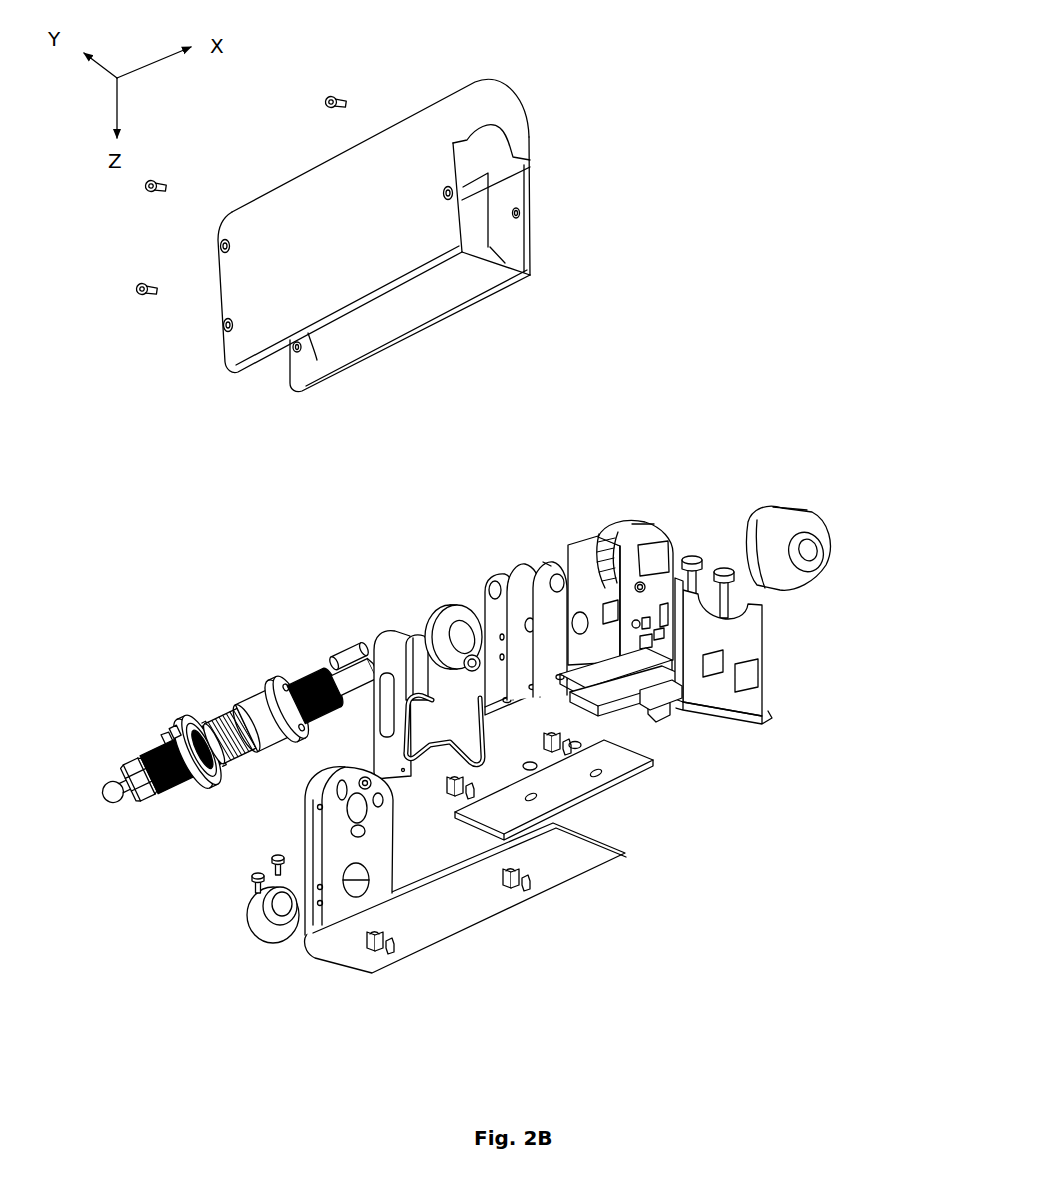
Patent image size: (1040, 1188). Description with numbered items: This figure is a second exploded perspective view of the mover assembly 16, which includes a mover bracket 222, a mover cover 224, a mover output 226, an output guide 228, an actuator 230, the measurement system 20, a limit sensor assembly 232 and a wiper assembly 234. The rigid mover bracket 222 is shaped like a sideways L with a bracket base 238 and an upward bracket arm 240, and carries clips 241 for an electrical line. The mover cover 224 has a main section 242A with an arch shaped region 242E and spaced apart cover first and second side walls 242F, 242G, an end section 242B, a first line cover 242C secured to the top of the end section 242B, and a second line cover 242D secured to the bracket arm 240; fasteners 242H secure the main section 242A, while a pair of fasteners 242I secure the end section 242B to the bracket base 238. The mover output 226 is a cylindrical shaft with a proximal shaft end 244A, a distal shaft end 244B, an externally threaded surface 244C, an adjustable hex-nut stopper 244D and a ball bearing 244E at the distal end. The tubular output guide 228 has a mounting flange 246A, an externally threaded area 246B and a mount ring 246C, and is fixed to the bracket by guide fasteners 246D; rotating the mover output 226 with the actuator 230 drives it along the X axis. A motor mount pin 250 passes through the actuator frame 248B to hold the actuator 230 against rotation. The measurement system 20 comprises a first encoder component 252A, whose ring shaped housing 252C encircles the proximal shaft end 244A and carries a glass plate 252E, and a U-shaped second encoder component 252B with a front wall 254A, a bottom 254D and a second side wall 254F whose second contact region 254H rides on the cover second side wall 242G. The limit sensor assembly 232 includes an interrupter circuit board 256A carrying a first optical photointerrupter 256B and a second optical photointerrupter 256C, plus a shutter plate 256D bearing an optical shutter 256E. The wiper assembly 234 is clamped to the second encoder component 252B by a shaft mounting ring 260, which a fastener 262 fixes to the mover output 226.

The mover assembly 16 is at (716, 163).
The measurement system 20 is at (678, 356).
The mover bracket 222 is at (447, 1050).
The mover cover 224 is at (477, 64).
The mover output 226 is at (157, 753).
The output guide 228 is at (250, 707).
The actuator 230 is at (377, 671).
The limit sensor assembly 232 is at (885, 901).
The wiper assembly 234 is at (512, 459).
The bracket base 238 is at (350, 953).
The bracket arm 240 is at (330, 870).
The clips 241 is at (403, 967).
The main section 242A is at (283, 181).
The end section 242B is at (745, 720).
The first line cover 242C is at (787, 587).
The second line cover 242D is at (260, 925).
The arch shaped region 242E is at (393, 133).
The cover first side wall 242F is at (529, 230).
The cover second side wall 242G is at (462, 242).
The fasteners 242H is at (330, 97).
The fasteners 242I is at (695, 555).
The proximal shaft end 244A is at (366, 667).
The distal shaft end 244B is at (137, 762).
The externally threaded surface 244C is at (203, 727).
The stopper 244D is at (121, 760).
The ball bearing 244E is at (109, 790).
The mounting flange 246A is at (280, 745).
The externally threaded area 246B is at (223, 780).
The mount ring 246C is at (193, 788).
The guide fasteners 246D is at (337, 664).
The actuator frame 248B is at (427, 753).
The motor mount pin 250 is at (407, 760).
The first encoder component 252A is at (616, 526).
The second encoder component 252B is at (640, 520).
The housing 252C is at (608, 533).
The glass plate 252E is at (643, 523).
The front wall 254A is at (655, 612).
The bottom 254D is at (623, 668).
The second side wall 254F is at (547, 563).
The second contact region 254H is at (576, 578).
The interrupter circuit board 256A is at (549, 582).
The first optical photointerrupter 256B is at (523, 590).
The second optical photointerrupter 256C is at (494, 602).
The shutter plate 256D is at (626, 690).
The optical shutter 256E is at (592, 676).
The shaft mounting ring 260 is at (460, 640).
The fastener 262 is at (410, 640).